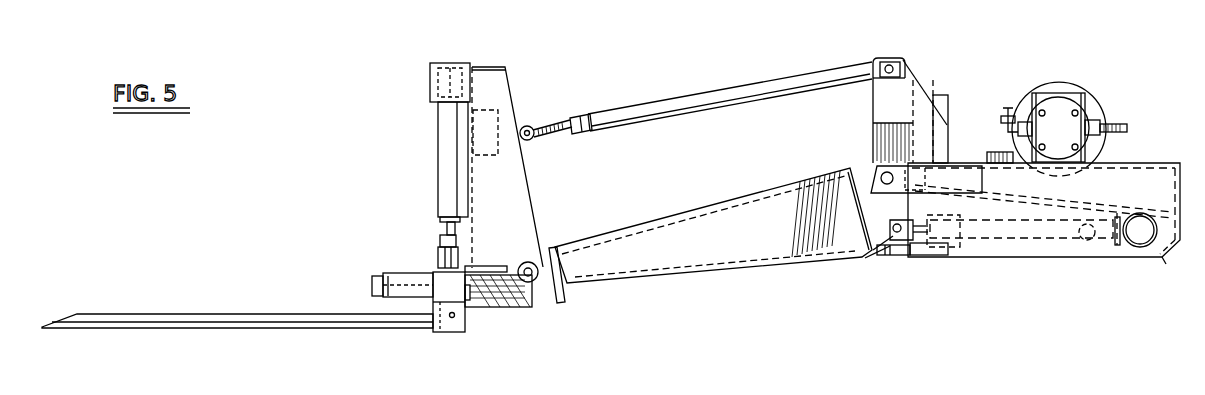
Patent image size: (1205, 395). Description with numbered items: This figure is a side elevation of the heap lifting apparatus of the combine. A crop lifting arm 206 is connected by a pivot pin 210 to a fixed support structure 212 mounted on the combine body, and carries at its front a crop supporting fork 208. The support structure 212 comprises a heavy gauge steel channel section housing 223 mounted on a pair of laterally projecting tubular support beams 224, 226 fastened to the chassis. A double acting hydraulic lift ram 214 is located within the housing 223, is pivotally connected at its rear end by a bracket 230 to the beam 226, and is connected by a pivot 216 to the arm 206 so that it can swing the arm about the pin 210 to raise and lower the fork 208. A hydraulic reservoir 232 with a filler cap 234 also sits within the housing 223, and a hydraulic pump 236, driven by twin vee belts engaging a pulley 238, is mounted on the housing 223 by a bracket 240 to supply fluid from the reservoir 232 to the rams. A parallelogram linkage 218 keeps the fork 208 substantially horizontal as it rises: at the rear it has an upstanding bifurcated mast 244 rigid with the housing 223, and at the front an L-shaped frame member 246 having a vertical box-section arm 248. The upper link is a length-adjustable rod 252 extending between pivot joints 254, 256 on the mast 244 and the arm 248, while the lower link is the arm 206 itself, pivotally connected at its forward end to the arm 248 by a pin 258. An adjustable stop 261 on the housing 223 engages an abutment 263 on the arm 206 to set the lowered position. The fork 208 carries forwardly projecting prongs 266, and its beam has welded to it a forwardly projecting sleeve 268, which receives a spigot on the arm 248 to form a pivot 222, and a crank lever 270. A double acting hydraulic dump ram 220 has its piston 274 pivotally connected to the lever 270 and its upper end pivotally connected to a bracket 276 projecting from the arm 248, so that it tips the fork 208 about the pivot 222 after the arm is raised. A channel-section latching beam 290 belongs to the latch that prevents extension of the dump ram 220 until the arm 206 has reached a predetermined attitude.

The crop lifting arm 206 is at (640, 273).
The fork 208 is at (458, 344).
The pivot pin 210 is at (881, 172).
The fixed support structure 212 is at (1165, 157).
The double acting hydraulic lift ram 214 is at (1043, 240).
The pivot 216 is at (872, 250).
The parallelogram linkage 218 is at (829, 53).
The double acting hydraulic dump ram 220 is at (438, 137).
The pivot 222 is at (366, 270).
The channel section housing 223 is at (1003, 212).
The tubular support beam 224 is at (933, 247).
The tubular support beam 226 is at (1140, 247).
The bracket 230 is at (1105, 247).
The hydraulic reservoir 232 is at (1162, 257).
The filler cap 234 is at (995, 150).
The hydraulic pump 236 is at (1083, 120).
The pulley 238 is at (1060, 83).
The bracket 240 is at (1042, 98).
The upstanding bifurcated mast 244 is at (905, 88).
The L-shaped frame member 246 is at (501, 57).
The vertical box-section arm 248 is at (488, 178).
The rod 252 is at (682, 100).
The pivot joint 254 is at (887, 64).
The pivot joint 256 is at (527, 126).
The pin 258 is at (530, 262).
The adjustable stop 261 is at (892, 256).
The abutment 263 is at (895, 232).
The prong 266 is at (122, 316).
The sleeve 268 is at (395, 290).
The crank lever 270 is at (450, 258).
The piston 274 is at (447, 228).
The bracket 276 is at (430, 88).
The channel-section latching beam 290 is at (492, 295).